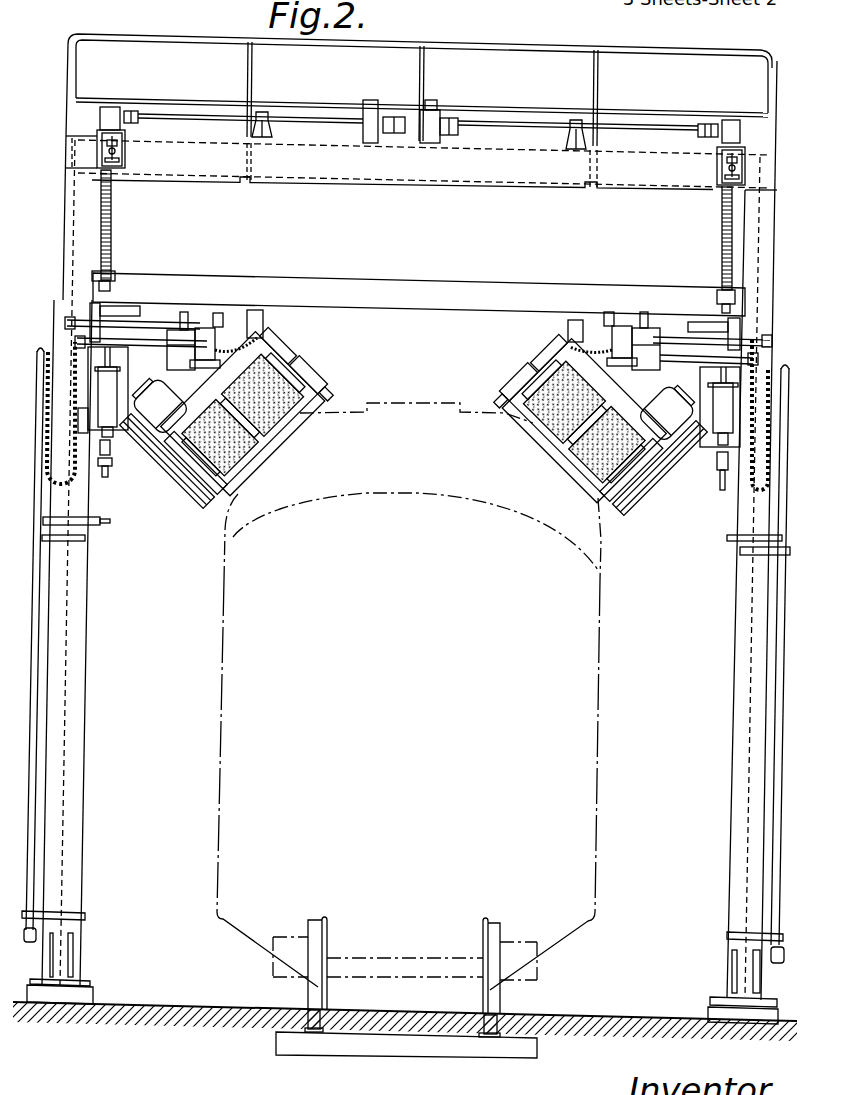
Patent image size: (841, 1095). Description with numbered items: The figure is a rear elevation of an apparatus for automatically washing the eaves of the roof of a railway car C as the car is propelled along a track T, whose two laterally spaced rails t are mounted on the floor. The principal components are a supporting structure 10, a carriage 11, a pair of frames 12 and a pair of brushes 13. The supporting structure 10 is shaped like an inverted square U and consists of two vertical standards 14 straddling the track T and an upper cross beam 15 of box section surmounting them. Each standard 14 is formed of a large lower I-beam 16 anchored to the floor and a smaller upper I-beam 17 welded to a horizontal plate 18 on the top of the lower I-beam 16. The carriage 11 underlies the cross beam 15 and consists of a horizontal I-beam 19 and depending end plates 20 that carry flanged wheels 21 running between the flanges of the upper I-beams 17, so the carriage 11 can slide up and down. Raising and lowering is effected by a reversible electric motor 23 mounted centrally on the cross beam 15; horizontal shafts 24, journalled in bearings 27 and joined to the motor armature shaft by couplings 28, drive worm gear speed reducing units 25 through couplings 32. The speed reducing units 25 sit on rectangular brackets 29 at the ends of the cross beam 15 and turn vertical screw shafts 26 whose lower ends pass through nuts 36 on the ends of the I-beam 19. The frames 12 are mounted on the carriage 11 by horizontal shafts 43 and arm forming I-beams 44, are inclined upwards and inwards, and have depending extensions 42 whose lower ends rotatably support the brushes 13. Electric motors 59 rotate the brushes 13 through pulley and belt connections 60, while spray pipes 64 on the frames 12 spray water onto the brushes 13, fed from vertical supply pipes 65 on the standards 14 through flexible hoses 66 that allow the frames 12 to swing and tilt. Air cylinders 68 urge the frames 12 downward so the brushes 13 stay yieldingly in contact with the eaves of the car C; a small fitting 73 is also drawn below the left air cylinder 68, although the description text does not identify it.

The supporting structure 10 is at (108, 808).
The carriage 11 is at (471, 268).
The frames 12 is at (296, 341).
The brushes 13 is at (300, 406).
The vertical standards 14 is at (89, 729).
The upper cross beam 15 is at (641, 181).
The lower I-beams 16 is at (88, 672).
The upper I-beams 17 is at (84, 493).
The horizontal plates 18 is at (112, 527).
The I-beam 19 is at (358, 278).
The end plates 20 is at (92, 308).
The flanged wheels 21 is at (82, 424).
The reversible electric motor 23 is at (441, 112).
The horizontally extending shafts 24 is at (218, 124).
The speed reducing units 25 is at (107, 107).
The screw shafts 26 is at (112, 209).
The bearings 27 is at (263, 112).
The couplings 28 is at (406, 108).
The rectangular brackets 29 is at (96, 151).
The couplings 32 is at (139, 114).
The nuts 36 is at (116, 274).
The depending extensions 42 is at (297, 366).
The horizontally extending shaft 43 is at (168, 334).
The arm forming I-beam 44 is at (206, 328).
The electric motors 59 is at (165, 413).
The pulley and belt connections 60 is at (183, 503).
The spray pipes 64 is at (209, 387).
The supply pipes 65 is at (782, 721).
The flexible hoses 66 is at (753, 486).
The air cylinders 68 is at (114, 386).
The fitting 73 is at (110, 468).
The railway car C is at (600, 646).
The track T is at (511, 1018).
The rails t is at (314, 1034).